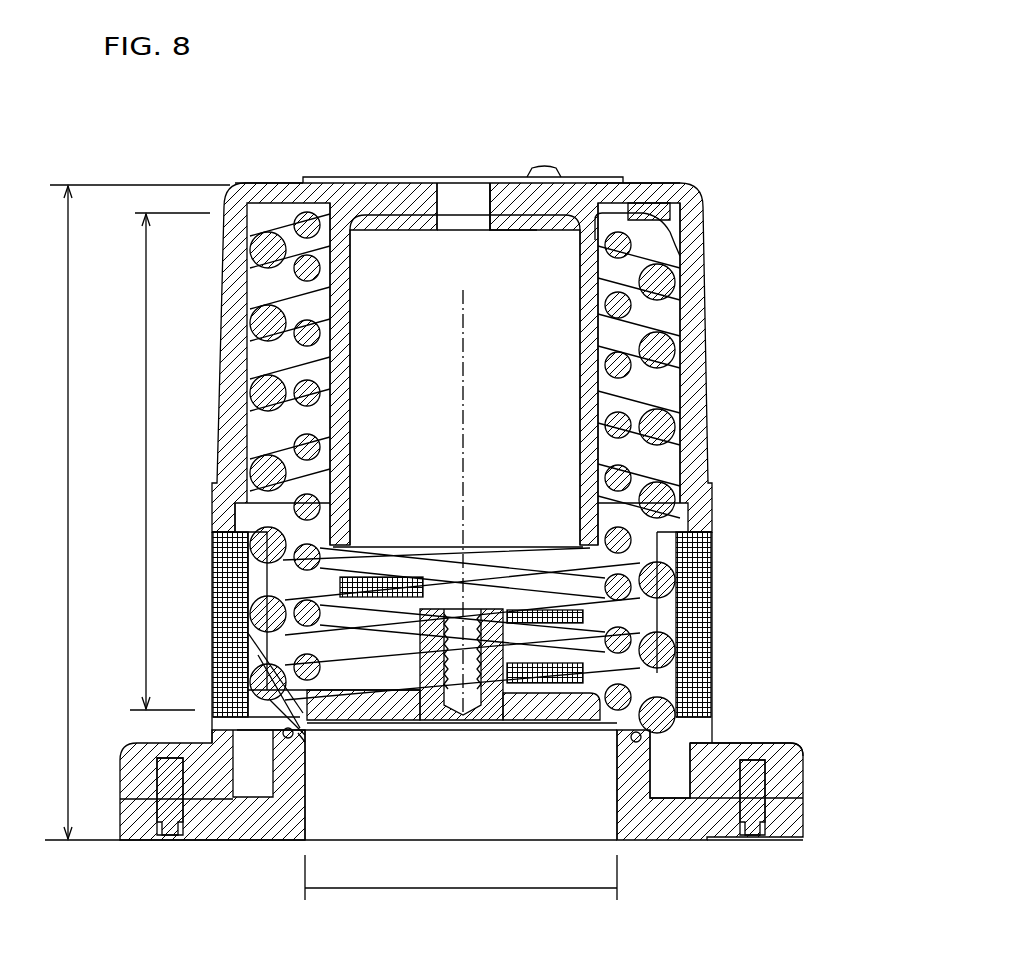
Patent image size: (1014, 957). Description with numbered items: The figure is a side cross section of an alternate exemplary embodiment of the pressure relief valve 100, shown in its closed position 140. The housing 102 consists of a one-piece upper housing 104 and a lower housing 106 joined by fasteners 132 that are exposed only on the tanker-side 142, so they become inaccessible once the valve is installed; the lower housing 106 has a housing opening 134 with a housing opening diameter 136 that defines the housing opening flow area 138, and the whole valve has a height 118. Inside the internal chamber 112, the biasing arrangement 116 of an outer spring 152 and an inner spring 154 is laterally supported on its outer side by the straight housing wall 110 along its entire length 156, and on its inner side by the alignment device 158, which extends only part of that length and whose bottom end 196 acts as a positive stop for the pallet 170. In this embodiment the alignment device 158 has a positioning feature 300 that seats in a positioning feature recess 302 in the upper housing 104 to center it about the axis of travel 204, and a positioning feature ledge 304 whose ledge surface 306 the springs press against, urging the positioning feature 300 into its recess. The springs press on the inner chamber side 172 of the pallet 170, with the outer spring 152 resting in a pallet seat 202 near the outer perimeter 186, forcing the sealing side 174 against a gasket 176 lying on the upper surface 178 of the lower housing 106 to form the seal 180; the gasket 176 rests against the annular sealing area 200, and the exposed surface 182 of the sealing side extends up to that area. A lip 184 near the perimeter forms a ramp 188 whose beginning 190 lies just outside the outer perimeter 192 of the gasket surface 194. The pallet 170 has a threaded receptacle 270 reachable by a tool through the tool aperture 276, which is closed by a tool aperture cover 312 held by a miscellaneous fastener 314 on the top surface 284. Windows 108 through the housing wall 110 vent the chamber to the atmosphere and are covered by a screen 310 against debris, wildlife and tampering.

The pressure relief valve 100 is at (700, 102).
The housing 102 is at (705, 225).
The upper housing 104 is at (462, 364).
The housing wall 110 is at (462, 364).
The biasing arrangement 116 is at (296, 176).
The positioning feature recess 302 is at (403, 174).
The tool aperture cover 312 is at (475, 182).
The miscellaneous fastener 314 is at (545, 166).
The top surface 284 is at (627, 183).
The positioning feature ledge 304 is at (655, 205).
The ledge surface 306 is at (672, 250).
The internal chamber 112 is at (664, 322).
The alignment device 158 is at (580, 342).
The inner spring 154 is at (318, 340).
The tool aperture 276 is at (462, 230).
The positioning feature 300 is at (523, 200).
The axis of travel 204 is at (464, 384).
The outer spring 152 is at (257, 318).
The bottom end 196 is at (580, 545).
The window 108 is at (664, 553).
The screen 310 is at (712, 570).
The sealing area 200 is at (713, 696).
The beginning of the ramp 190 is at (211, 724).
The receptacle 270 is at (420, 630).
The inner chamber side 172 is at (402, 690).
The exposed surface 182 is at (418, 722).
The pallet 170 is at (525, 722).
The sealing side 174 is at (400, 732).
The upper surface 178 is at (600, 730).
The gasket 176 is at (285, 736).
The seal 180 is at (280, 720).
The outer perimeter 192 is at (275, 750).
The ramp 188 is at (280, 764).
The lip 184 is at (680, 740).
The lower housing 106 is at (670, 840).
The closed position 140 is at (785, 729).
The fasteners 132 is at (752, 790).
The tanker-side 142 is at (785, 840).
The housing opening 134 is at (497, 807).
The housing opening flow area 138 is at (461, 785).
The height 118 is at (66, 508).
The entire length 156 is at (146, 452).
The housing opening diameter 136 is at (463, 890).
The pallet seat 202 is at (226, 636).
The gasket surface 194 is at (233, 666).
The outer perimeter 186 is at (249, 691).